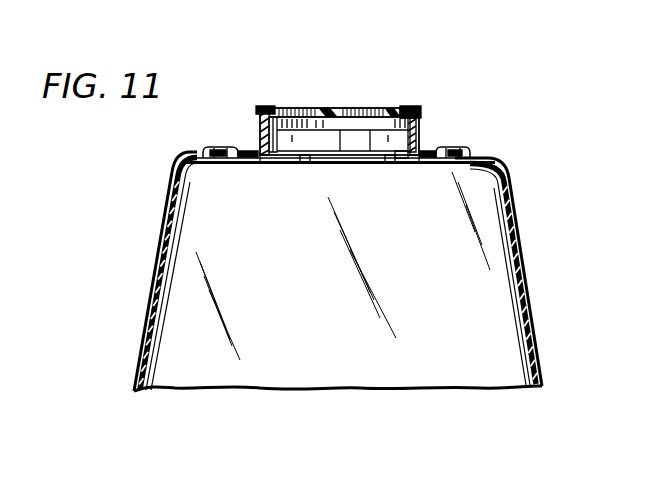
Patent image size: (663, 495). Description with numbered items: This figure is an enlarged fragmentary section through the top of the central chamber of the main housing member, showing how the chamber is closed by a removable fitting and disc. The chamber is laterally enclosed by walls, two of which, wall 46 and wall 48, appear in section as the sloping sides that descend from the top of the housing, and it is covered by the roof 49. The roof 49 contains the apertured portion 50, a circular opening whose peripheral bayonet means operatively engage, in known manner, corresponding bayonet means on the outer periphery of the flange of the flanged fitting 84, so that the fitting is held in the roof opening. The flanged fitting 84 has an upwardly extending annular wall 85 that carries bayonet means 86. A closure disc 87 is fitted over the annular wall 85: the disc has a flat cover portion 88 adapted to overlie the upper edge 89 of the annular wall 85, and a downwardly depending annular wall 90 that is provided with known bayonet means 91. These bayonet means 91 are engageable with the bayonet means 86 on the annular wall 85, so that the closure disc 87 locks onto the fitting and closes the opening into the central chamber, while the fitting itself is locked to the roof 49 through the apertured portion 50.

The wall 46 is at (165, 207).
The wall 48 is at (510, 178).
The roof 49 is at (236, 163).
The apertured portion 50 is at (243, 163).
The flanged fitting 84 is at (246, 140).
The annular wall 85 is at (418, 132).
The bayonet means 86 is at (418, 112).
The closure disc 87 is at (291, 82).
The flat cover portion 88 is at (410, 99).
The upper edge 89 is at (261, 106).
The annular wall 90 is at (284, 122).
The bayonet means 91 is at (418, 162).